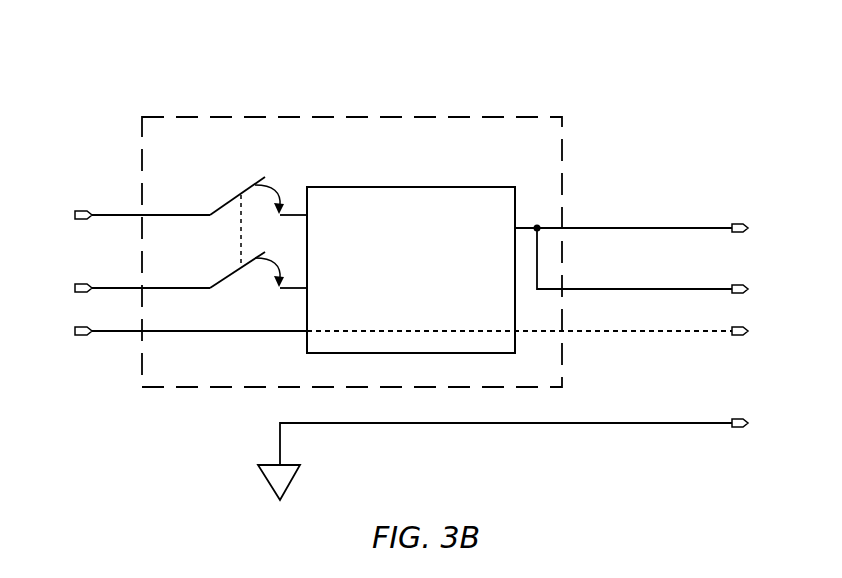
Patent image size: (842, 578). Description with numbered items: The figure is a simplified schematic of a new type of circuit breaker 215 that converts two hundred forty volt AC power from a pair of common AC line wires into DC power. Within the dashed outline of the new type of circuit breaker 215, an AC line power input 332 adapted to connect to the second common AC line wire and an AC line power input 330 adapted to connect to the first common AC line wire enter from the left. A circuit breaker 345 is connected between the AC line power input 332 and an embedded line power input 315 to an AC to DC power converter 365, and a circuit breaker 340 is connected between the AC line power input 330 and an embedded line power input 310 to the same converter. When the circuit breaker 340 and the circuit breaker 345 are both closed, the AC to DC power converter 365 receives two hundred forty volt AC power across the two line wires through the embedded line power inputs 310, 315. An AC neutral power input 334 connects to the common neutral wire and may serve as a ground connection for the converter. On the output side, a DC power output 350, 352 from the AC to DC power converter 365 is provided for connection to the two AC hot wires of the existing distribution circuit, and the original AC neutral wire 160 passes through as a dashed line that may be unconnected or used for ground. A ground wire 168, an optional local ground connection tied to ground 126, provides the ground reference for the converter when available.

The new type of circuit breaker 215 is at (545, 110).
The AC to DC power converter 365 is at (430, 224).
The AC line power input 332 is at (85, 210).
The AC line power input 330 is at (85, 283).
The AC neutral power input 334 is at (85, 326).
The circuit breaker 345 is at (233, 200).
The circuit breaker 340 is at (233, 273).
The embedded line power input 315 is at (292, 217).
The embedded line power input 310 is at (292, 290).
The DC power output 350 is at (738, 222).
The DC power output 352 is at (738, 283).
The AC neutral wire 160 is at (738, 325).
The ground wire 168 is at (738, 418).
The ground 126 is at (293, 478).